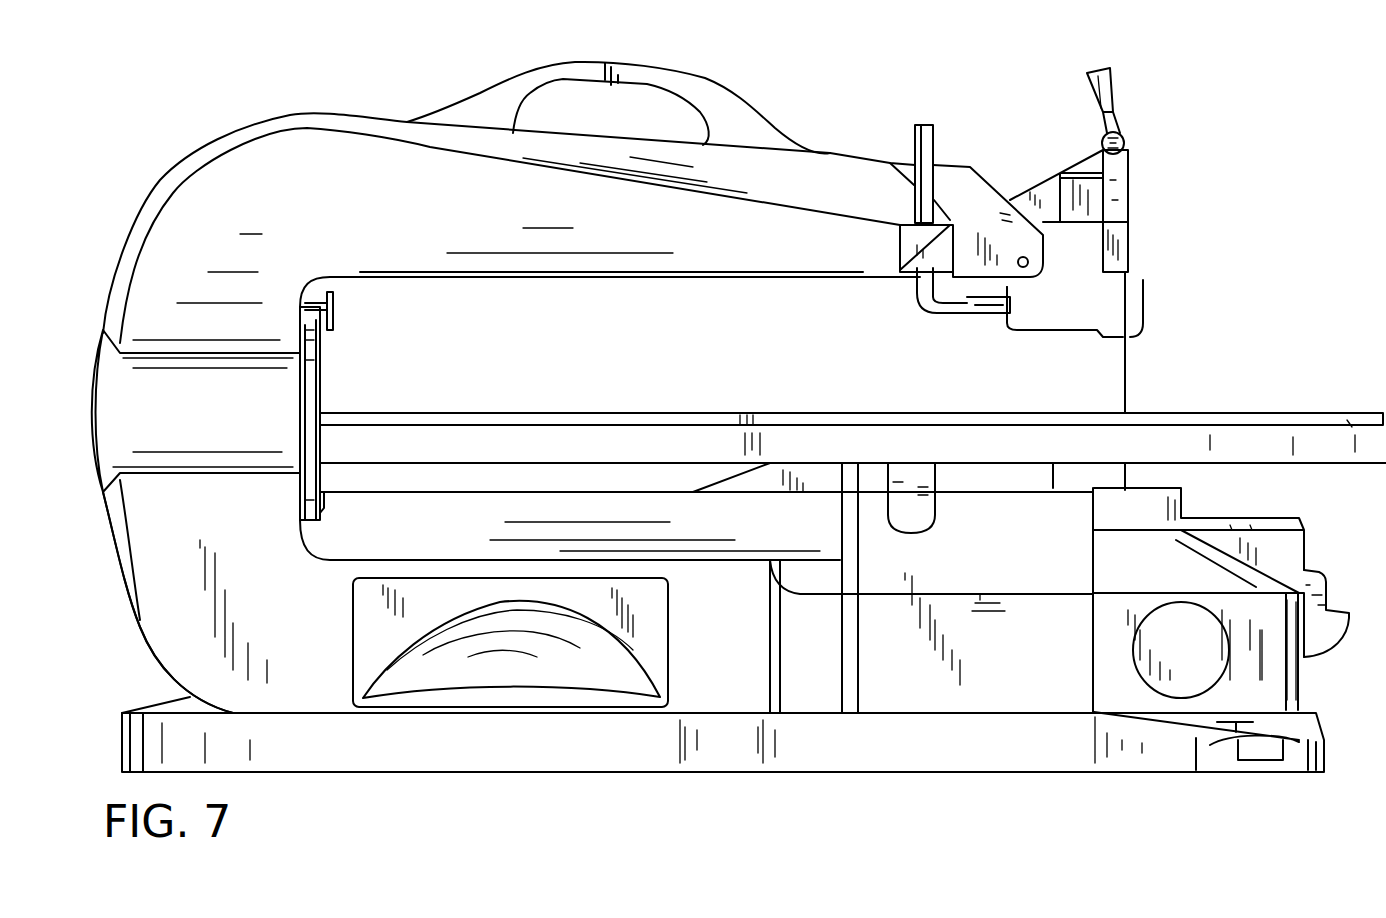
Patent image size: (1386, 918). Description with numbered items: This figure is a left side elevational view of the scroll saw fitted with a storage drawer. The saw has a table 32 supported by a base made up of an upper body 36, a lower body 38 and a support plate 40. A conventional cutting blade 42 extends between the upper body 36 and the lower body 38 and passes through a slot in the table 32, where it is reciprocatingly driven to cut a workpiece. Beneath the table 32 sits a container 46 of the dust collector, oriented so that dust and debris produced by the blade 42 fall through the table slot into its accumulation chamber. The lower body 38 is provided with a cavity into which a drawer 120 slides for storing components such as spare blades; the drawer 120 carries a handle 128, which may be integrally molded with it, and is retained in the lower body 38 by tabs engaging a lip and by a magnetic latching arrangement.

The table 32 is at (1273, 437).
The upper body 36 is at (223, 187).
The lower body 38 is at (208, 660).
The support plate 40 is at (627, 755).
The cutting blade 42 is at (1125, 388).
The container 46 is at (1236, 690).
The drawer 120 is at (400, 608).
The handle 128 is at (493, 673).